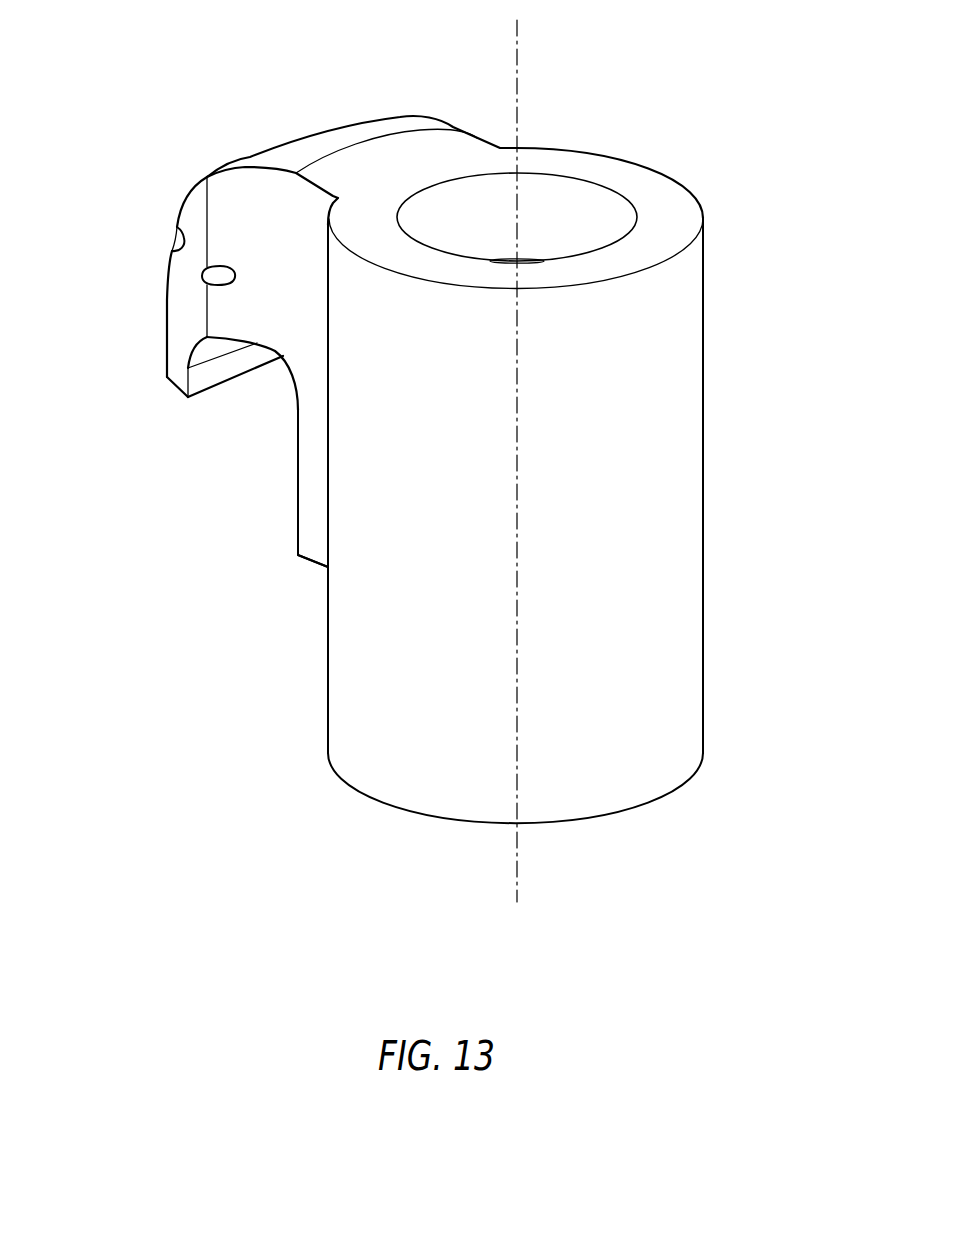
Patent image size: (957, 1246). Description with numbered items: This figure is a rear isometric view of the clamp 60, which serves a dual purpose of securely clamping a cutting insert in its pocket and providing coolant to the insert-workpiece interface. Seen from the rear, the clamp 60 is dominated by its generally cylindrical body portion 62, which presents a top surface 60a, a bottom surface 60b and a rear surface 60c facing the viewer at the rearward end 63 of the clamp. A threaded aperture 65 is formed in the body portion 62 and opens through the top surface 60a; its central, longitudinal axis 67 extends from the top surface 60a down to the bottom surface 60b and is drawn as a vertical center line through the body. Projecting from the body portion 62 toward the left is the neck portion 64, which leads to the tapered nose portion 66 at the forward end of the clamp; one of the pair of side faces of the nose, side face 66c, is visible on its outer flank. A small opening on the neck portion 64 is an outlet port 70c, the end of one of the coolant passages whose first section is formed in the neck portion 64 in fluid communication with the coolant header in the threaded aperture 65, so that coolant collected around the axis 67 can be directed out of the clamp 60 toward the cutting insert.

The clamp 60 is at (158, 465).
The top surface 60a is at (398, 158).
The bottom surface 60b is at (367, 798).
The rear surface 60c is at (677, 618).
The body portion 62 is at (373, 672).
The rearward end 63 is at (733, 343).
The neck portion 64 is at (283, 325).
The threaded aperture 65 is at (610, 217).
The tapered nose portion 66 is at (189, 272).
The side face 66c is at (178, 297).
The central, longitudinal axis 67 is at (520, 55).
The outlet port 70c is at (212, 280).